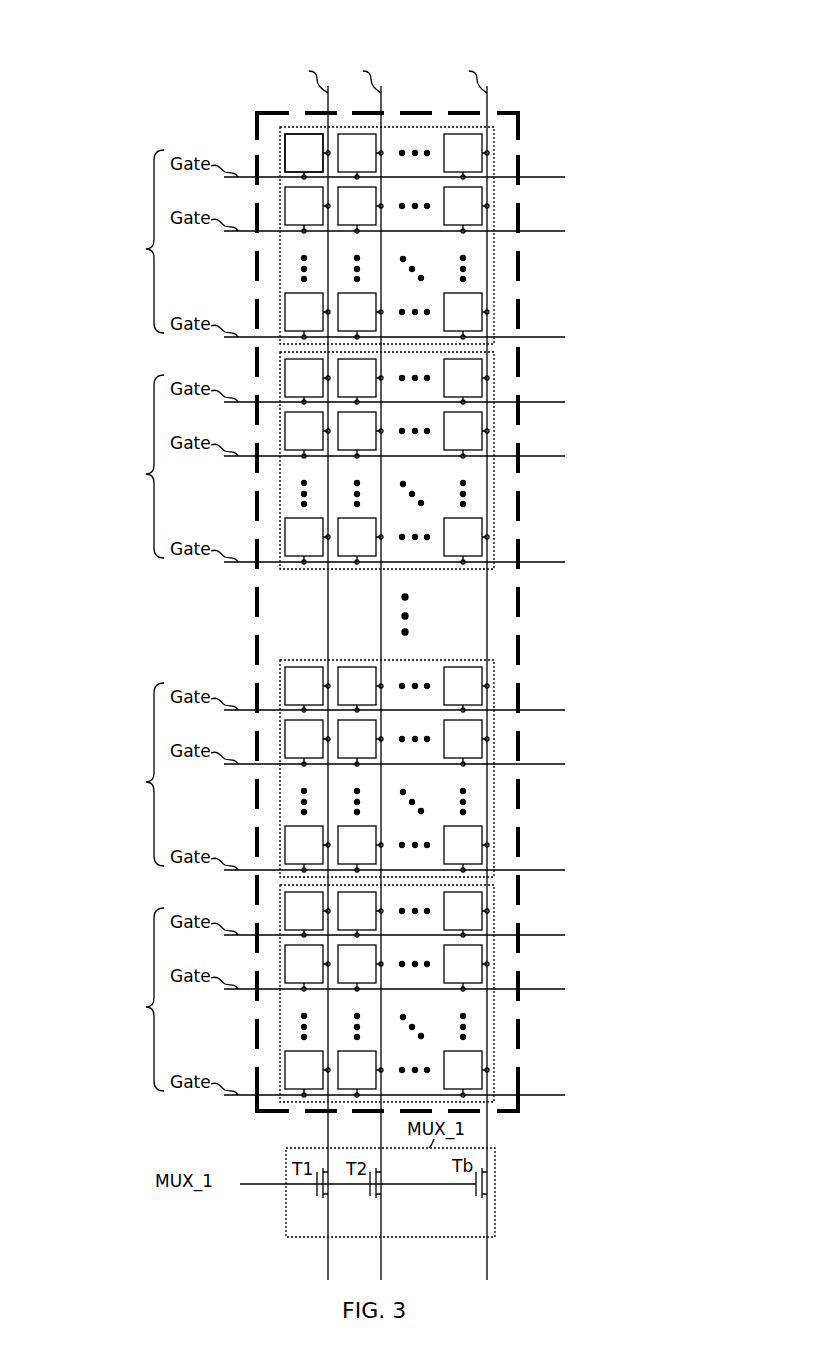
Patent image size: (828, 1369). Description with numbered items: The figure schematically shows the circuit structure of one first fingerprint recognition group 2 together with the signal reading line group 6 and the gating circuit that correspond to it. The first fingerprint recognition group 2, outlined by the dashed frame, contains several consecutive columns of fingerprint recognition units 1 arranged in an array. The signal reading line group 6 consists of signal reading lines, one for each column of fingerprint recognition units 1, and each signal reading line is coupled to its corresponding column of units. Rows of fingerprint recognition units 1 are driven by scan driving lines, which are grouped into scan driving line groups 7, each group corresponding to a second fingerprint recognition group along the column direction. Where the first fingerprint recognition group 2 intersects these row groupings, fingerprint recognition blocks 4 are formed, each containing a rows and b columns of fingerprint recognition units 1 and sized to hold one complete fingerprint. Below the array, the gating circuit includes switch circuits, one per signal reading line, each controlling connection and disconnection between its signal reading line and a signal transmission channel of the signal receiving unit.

The fingerprint recognition unit 1 is at (310, 160).
The first fingerprint recognition group 2 is at (512, 108).
The fingerprint recognition block 4 is at (496, 267).
The signal reading line group 6 is at (462, 53).
The scan driving line group 7 is at (144, 620).